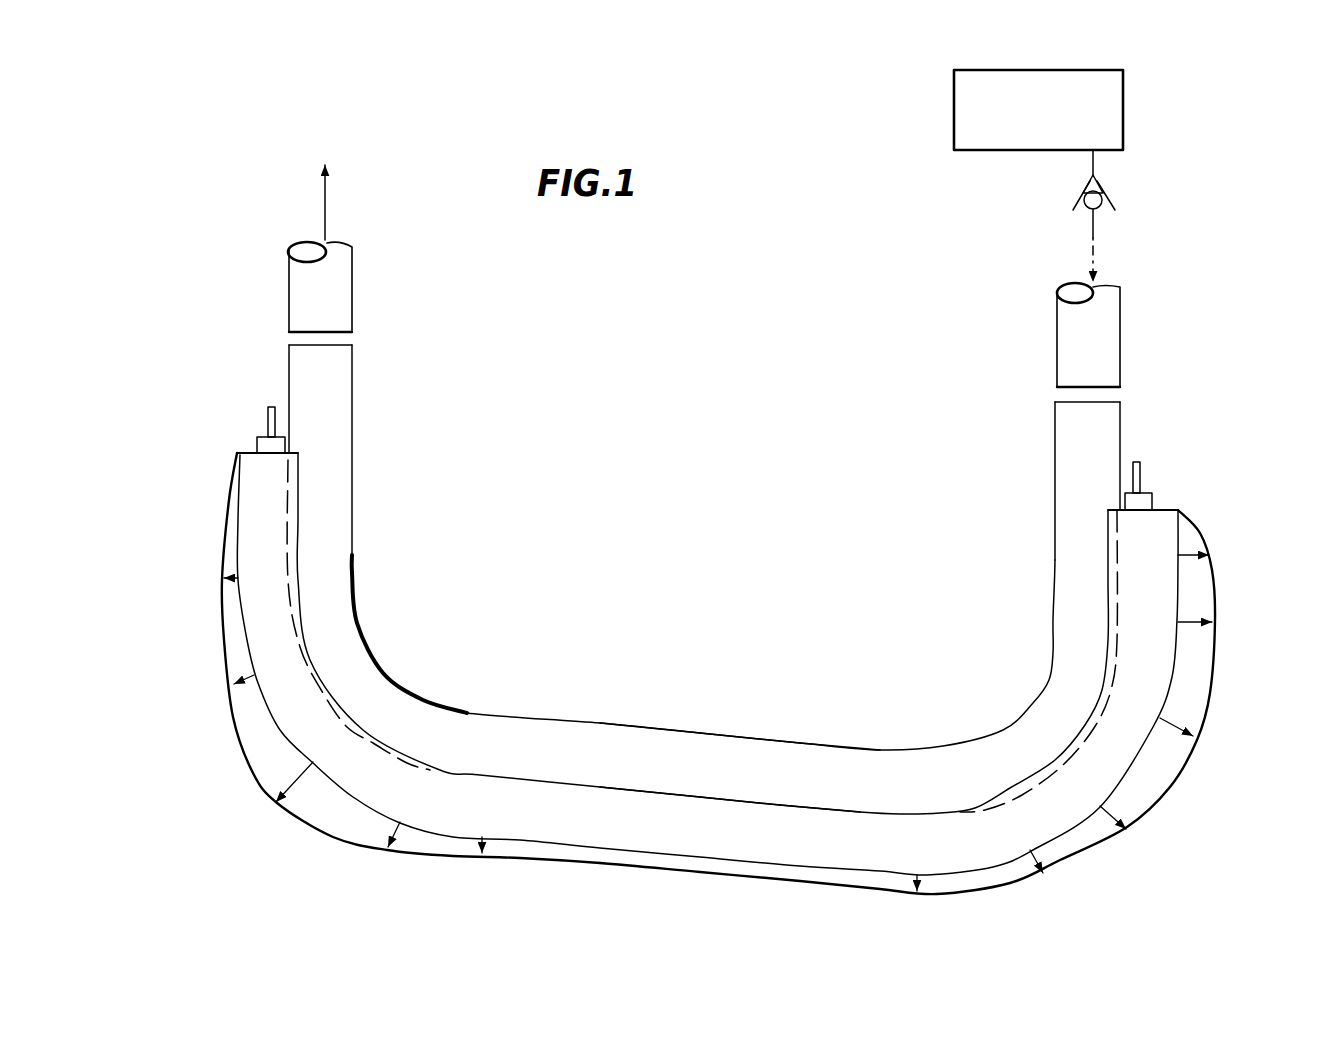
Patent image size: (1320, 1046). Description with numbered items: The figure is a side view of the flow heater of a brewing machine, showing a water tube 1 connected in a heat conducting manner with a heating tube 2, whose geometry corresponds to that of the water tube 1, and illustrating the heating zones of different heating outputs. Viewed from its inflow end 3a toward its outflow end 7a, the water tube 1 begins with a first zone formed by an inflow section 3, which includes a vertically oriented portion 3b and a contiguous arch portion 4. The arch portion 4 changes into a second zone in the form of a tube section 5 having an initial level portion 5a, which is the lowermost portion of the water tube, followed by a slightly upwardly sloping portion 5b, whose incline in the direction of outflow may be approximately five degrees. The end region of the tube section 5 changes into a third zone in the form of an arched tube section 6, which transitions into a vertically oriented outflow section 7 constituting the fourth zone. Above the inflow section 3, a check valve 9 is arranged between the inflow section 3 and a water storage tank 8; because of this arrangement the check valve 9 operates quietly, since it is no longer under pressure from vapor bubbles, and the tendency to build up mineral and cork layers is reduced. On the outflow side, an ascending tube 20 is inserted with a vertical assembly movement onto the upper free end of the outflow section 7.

The water tube 1 is at (530, 746).
The heating tube 2 is at (793, 830).
The inflow section 3 is at (1113, 430).
The inflow end 3a is at (1108, 398).
The vertically oriented portion 3b is at (1065, 427).
The arch portion 4 is at (1070, 717).
The tube section 5 is at (665, 770).
The initial level portion 5a is at (953, 788).
The slightly upwardly sloping portion 5b is at (735, 785).
The arched tube section 6 is at (353, 687).
The outflow section 7 is at (302, 360).
The outflow end 7a is at (353, 345).
The water storage tank 8 is at (1113, 125).
The check valve 9 is at (1103, 193).
The ascending tube 20 is at (340, 283).